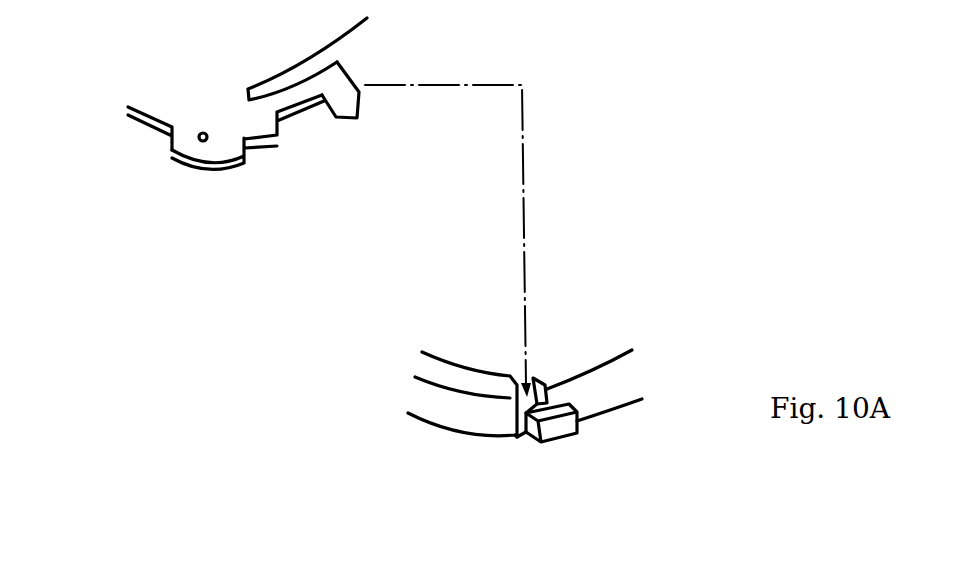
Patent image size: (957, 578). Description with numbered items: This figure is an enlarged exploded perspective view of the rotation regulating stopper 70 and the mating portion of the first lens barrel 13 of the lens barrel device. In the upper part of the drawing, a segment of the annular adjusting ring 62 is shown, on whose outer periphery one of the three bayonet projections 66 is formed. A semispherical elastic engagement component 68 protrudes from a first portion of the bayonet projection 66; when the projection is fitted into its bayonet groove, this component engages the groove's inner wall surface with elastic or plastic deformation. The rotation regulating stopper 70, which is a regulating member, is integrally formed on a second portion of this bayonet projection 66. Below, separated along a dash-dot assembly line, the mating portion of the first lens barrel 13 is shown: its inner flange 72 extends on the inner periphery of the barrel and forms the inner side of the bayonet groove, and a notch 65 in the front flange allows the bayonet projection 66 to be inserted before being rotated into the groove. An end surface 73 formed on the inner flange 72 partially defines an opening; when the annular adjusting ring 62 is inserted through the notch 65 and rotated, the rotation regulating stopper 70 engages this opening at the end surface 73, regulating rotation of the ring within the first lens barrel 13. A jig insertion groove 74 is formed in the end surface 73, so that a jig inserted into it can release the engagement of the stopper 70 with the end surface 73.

The first lens barrel 13 is at (424, 423).
The annular adjusting ring 62 is at (166, 103).
The notch 65 is at (523, 434).
The bayonet projection 66 is at (229, 143).
The elastic engagement component 68 is at (204, 133).
The rotation regulating stopper 70 is at (336, 100).
The inner flange 72 is at (547, 373).
The end surface 73 is at (535, 377).
The jig insertion groove 74 is at (577, 424).